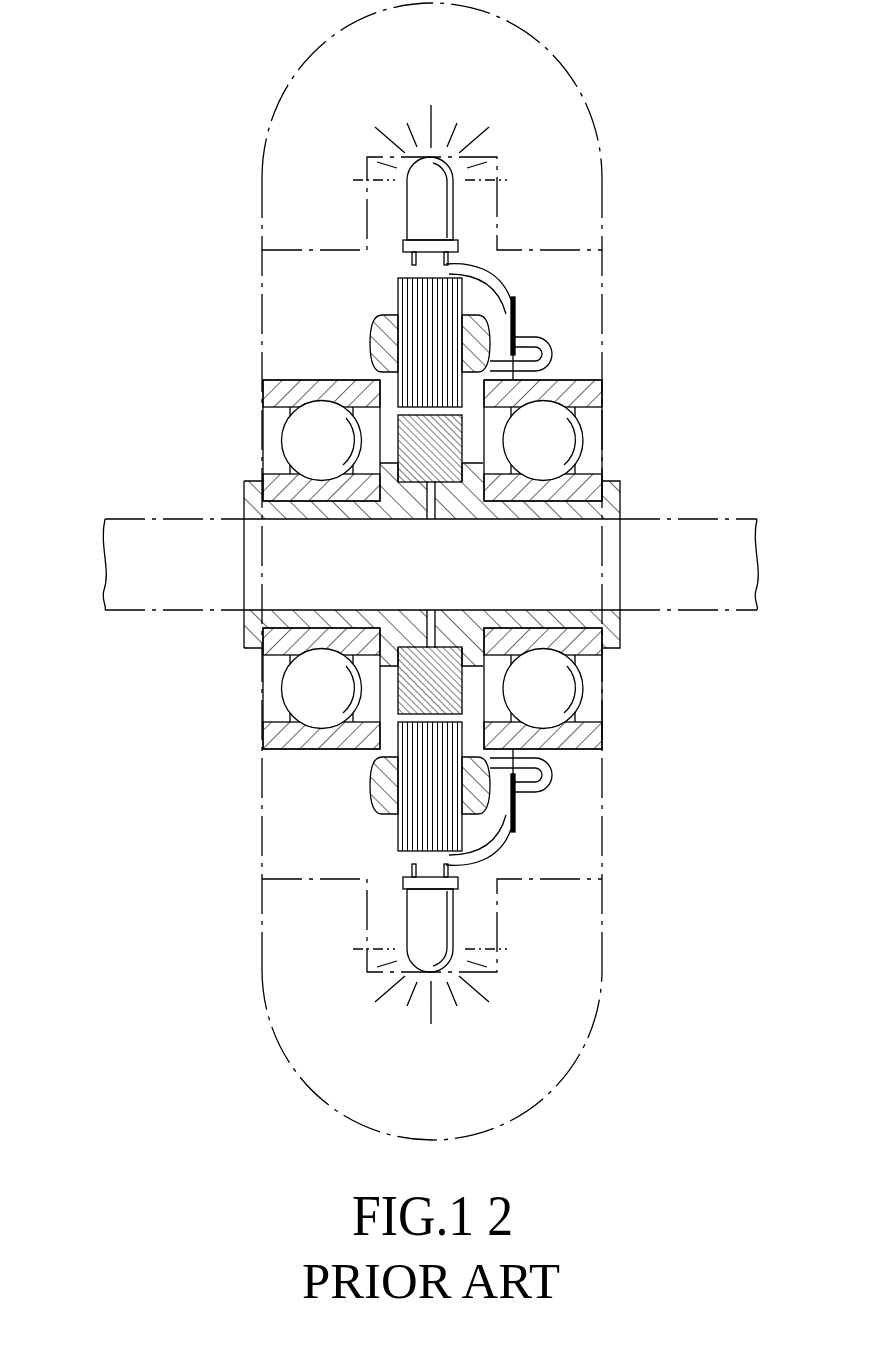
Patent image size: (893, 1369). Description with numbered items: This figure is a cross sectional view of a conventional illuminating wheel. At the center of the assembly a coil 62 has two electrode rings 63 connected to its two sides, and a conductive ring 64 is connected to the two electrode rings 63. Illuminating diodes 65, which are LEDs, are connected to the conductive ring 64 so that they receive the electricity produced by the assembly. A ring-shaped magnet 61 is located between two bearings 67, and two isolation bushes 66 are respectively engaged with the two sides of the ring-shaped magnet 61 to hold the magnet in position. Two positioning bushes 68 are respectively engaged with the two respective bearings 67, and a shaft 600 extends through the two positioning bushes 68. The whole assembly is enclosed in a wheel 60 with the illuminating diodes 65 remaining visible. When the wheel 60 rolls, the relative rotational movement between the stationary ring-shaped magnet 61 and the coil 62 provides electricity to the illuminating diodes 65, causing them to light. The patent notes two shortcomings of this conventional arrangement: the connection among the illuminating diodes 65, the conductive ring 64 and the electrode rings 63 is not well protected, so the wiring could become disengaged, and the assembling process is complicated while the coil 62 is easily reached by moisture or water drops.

The wheel 60 is at (593, 1027).
The shaft 600 is at (703, 553).
The ring-shaped magnet 61 is at (420, 440).
The coil 62 is at (447, 795).
The electrode rings 63 is at (382, 788).
The conductive ring 64 is at (517, 817).
The illuminating diodes 65 is at (443, 919).
The isolation bushes 66 is at (470, 643).
The bearings 67 is at (585, 703).
The positioning bushes 68 is at (263, 608).